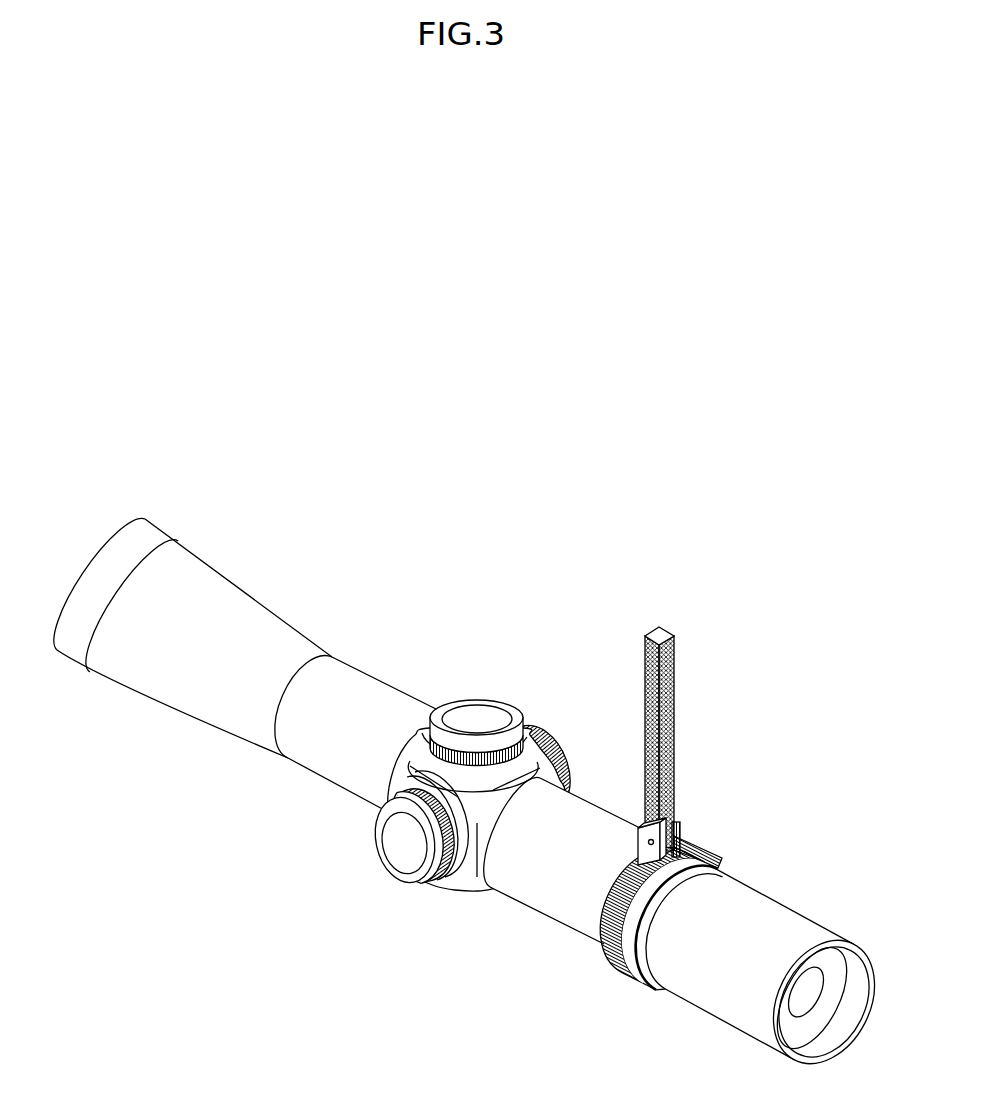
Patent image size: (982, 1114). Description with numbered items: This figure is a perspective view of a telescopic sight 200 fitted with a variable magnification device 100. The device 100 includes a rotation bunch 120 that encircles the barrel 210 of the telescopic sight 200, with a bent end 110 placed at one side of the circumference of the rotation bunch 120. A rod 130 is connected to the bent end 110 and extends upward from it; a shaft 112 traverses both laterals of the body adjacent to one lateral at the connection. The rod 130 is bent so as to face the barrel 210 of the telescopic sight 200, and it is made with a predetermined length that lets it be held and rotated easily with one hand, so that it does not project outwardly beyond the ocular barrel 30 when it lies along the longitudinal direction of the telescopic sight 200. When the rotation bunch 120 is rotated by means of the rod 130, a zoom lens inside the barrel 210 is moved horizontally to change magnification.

The telescopic sight 200 is at (474, 799).
The barrel 210 is at (543, 898).
The ocular barrel 30 is at (787, 918).
The variable magnification device 100 is at (685, 848).
The bent end 110 is at (681, 830).
The shaft 112 is at (648, 842).
The rotation bunch 120 is at (696, 846).
The rod 130 is at (675, 664).